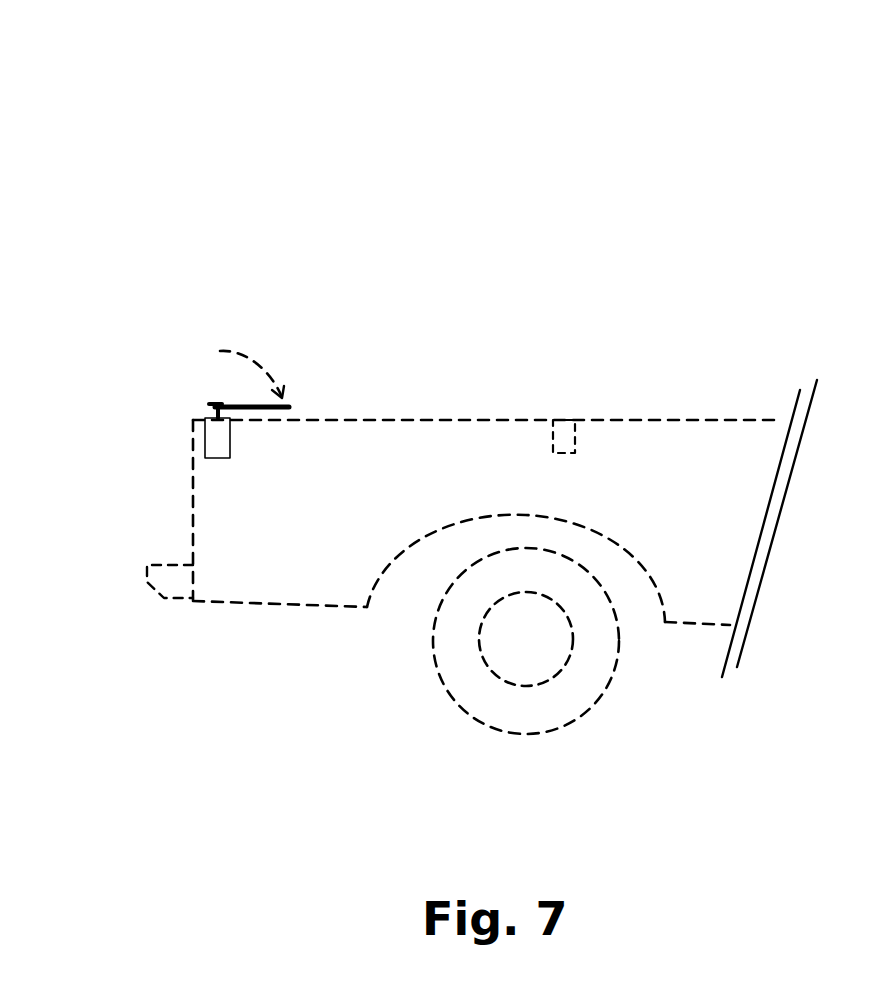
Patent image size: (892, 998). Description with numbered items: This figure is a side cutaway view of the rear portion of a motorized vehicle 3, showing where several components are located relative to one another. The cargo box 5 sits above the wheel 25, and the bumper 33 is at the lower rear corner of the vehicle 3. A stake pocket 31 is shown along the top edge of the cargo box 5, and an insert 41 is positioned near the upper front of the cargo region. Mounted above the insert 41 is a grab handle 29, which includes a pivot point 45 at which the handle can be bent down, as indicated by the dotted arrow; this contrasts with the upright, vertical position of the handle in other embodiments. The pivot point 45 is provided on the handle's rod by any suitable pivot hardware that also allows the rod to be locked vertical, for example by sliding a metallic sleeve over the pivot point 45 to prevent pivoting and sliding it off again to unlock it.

The vehicle 3 is at (287, 152).
The cargo box 5 is at (653, 473).
The wheel 25 is at (457, 665).
The grab handle 29 is at (244, 403).
The stake pocket 31 is at (565, 432).
The bumper 33 is at (168, 583).
The insert 41 is at (216, 446).
The pivot point 45 is at (216, 405).